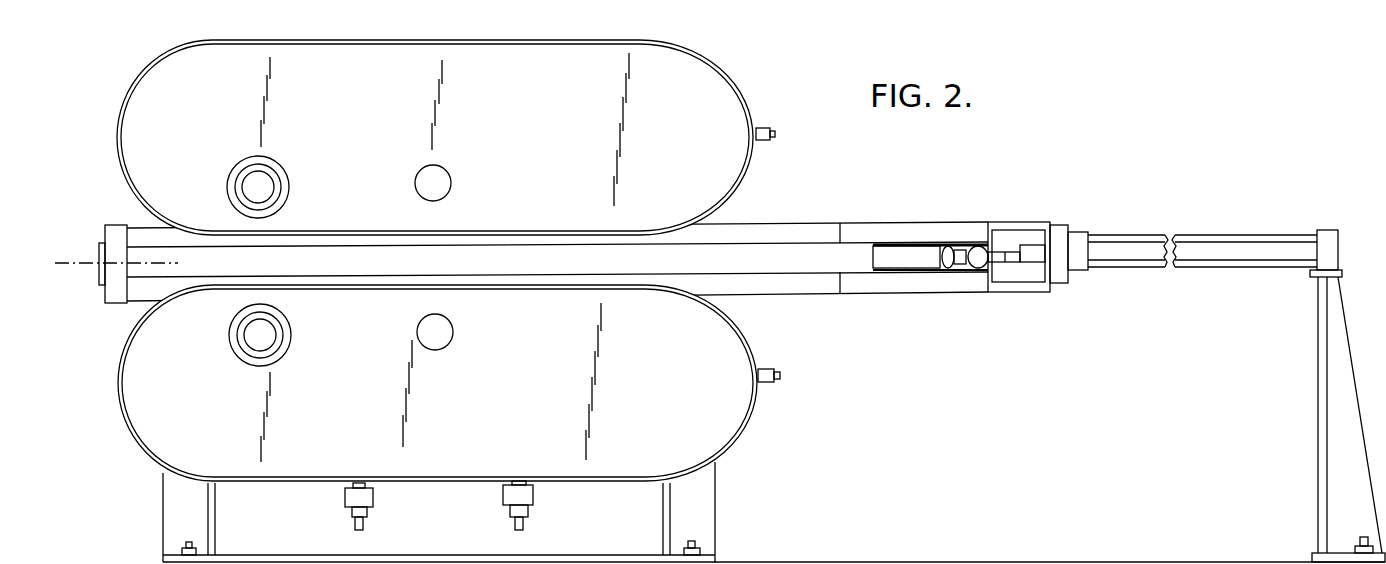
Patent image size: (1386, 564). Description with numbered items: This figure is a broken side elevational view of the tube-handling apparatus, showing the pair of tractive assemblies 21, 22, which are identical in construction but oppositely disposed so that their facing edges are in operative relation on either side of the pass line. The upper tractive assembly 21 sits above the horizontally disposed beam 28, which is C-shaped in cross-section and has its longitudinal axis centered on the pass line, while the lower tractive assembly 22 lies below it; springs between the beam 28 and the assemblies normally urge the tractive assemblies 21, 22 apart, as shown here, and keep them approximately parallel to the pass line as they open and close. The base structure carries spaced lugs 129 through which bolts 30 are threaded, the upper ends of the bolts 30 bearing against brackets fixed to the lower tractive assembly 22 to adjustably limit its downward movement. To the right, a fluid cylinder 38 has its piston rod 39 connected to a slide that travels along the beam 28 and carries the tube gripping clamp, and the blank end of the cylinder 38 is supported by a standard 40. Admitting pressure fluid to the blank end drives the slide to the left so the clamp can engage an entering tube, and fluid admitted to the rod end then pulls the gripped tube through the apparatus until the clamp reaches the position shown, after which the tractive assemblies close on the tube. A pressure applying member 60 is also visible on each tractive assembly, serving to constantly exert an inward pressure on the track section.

The upper tractive assembly 21 is at (757, 85).
The lower tractive assembly 22 is at (752, 430).
The beam 28 is at (803, 222).
The bolts 30 is at (348, 527).
The fluid cylinder 38 is at (1203, 236).
The piston rod 39 is at (1028, 250).
The standard 40 is at (1318, 398).
The pressure applying member 60 is at (765, 126).
The lugs 129 is at (373, 500).